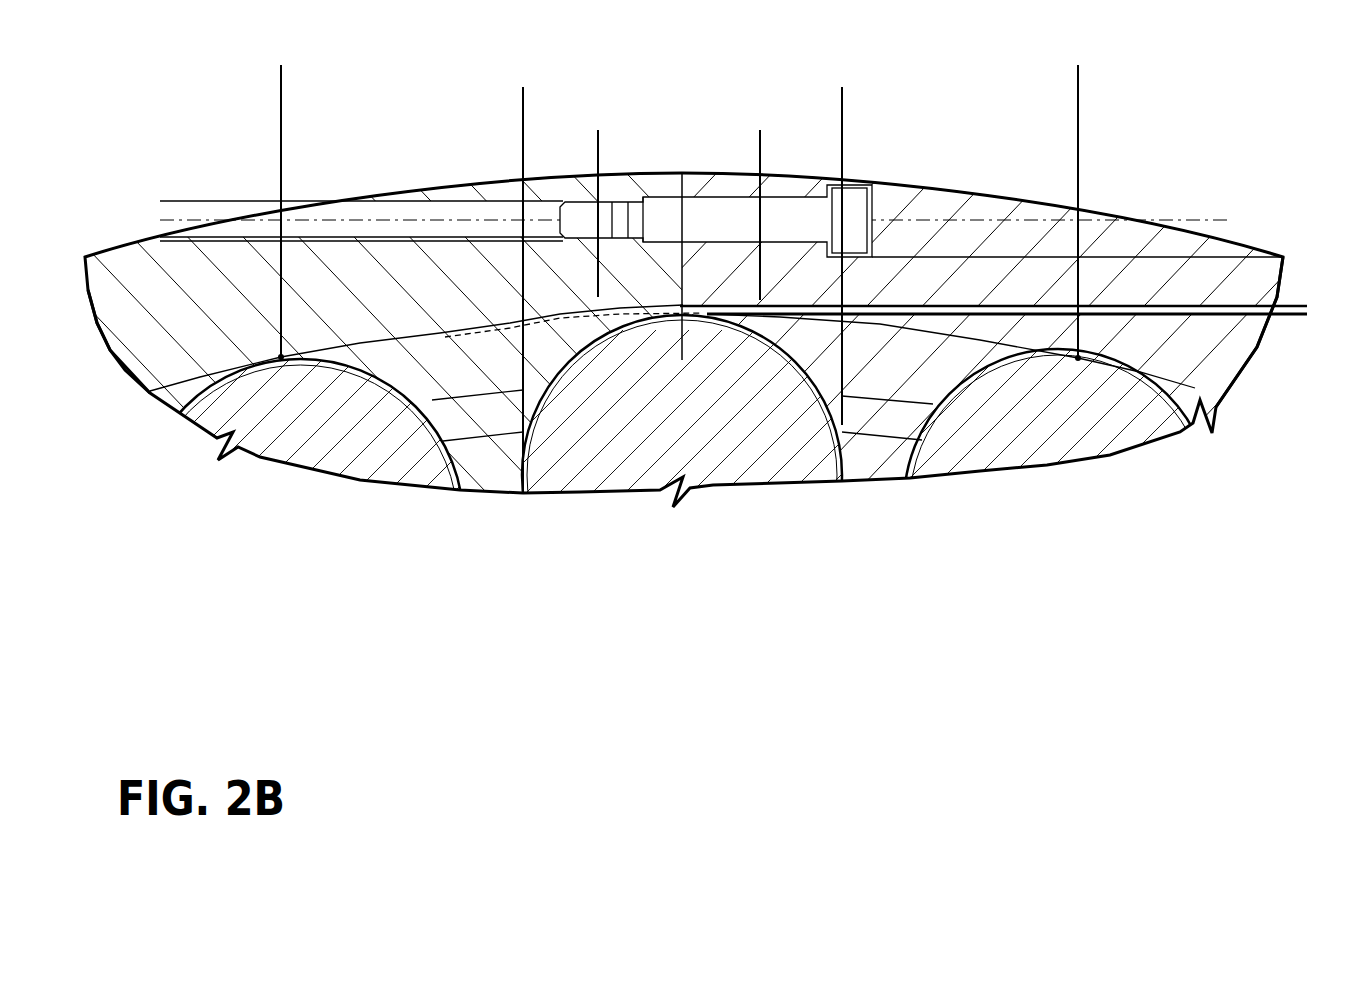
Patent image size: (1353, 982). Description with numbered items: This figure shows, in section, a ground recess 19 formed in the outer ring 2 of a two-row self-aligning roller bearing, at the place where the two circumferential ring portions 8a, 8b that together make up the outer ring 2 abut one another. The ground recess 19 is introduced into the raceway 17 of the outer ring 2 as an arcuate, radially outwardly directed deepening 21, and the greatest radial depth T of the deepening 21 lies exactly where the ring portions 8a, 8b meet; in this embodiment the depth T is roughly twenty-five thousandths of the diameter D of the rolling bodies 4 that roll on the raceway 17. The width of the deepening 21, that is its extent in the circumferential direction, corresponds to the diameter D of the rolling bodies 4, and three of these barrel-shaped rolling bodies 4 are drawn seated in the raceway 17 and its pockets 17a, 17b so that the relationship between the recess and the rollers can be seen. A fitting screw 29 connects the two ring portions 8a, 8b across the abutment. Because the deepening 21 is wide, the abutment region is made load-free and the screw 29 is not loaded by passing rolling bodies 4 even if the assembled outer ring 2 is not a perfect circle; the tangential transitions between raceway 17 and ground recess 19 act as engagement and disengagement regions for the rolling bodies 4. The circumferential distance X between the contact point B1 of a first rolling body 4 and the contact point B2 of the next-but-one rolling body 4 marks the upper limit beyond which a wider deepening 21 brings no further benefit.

The outer ring 2 is at (203, 192).
The rolling bodies 4 is at (320, 437).
The ring portion 8a is at (153, 310).
The ring portion 8b is at (1210, 340).
The raceway 17 is at (659, 457).
The first cavity 17a is at (427, 340).
The second cavity 17b is at (917, 327).
The ground recess 19 is at (632, 325).
The deepening 21 is at (680, 320).
The fitting screw 29 is at (863, 205).
The contact point of a first rolling body B1 is at (276, 362).
The contact point of the next-but-one rolling body B2 is at (1080, 362).
The circumferential distance X is at (1076, 65).
The diameter of the rolling bodies D is at (840, 108).
The depth T is at (1300, 382).